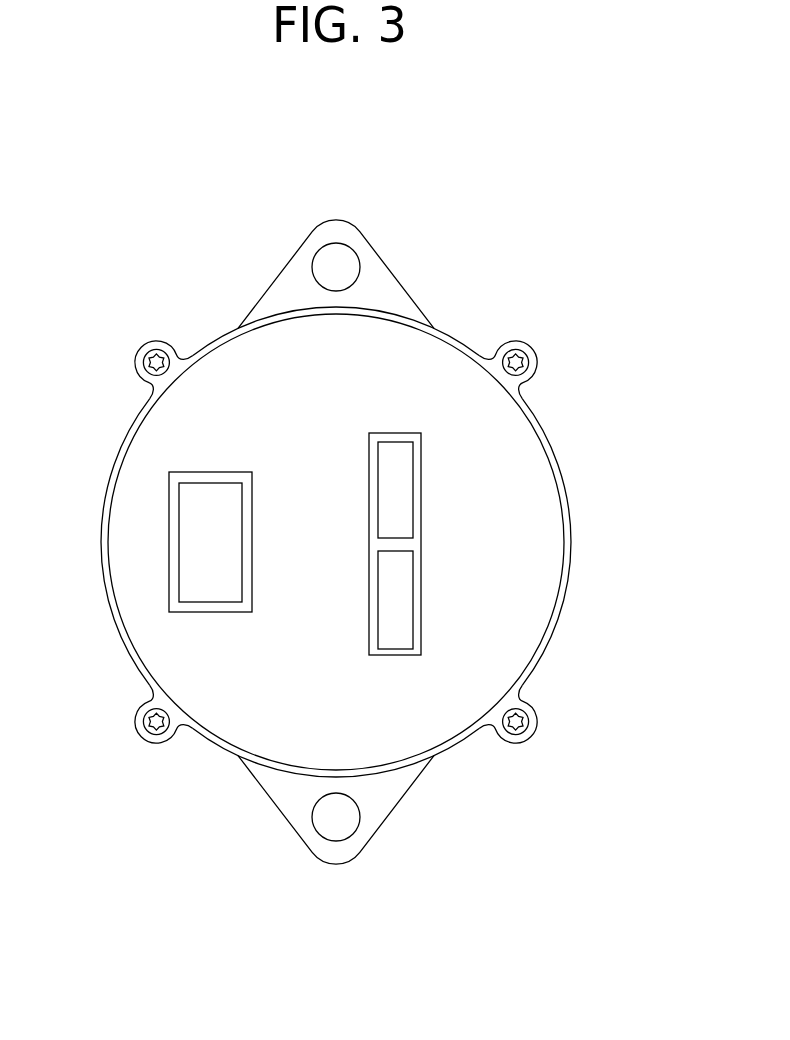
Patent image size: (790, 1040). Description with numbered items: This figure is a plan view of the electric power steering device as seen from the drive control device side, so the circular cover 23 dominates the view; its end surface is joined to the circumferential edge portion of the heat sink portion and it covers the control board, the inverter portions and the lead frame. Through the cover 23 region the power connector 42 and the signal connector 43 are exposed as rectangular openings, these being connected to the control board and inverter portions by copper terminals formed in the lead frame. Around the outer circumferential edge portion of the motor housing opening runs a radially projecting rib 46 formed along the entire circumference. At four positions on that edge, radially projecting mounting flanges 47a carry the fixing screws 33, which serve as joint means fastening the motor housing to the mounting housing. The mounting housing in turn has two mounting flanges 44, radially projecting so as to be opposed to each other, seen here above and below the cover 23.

The cover 23 is at (542, 543).
The fixing screw 33 is at (147, 340).
The power connector 42 is at (169, 500).
The signal connector 43 is at (421, 514).
The mounting flange 44 is at (375, 258).
The rib 46 is at (563, 612).
The mounting flange 47a is at (518, 698).